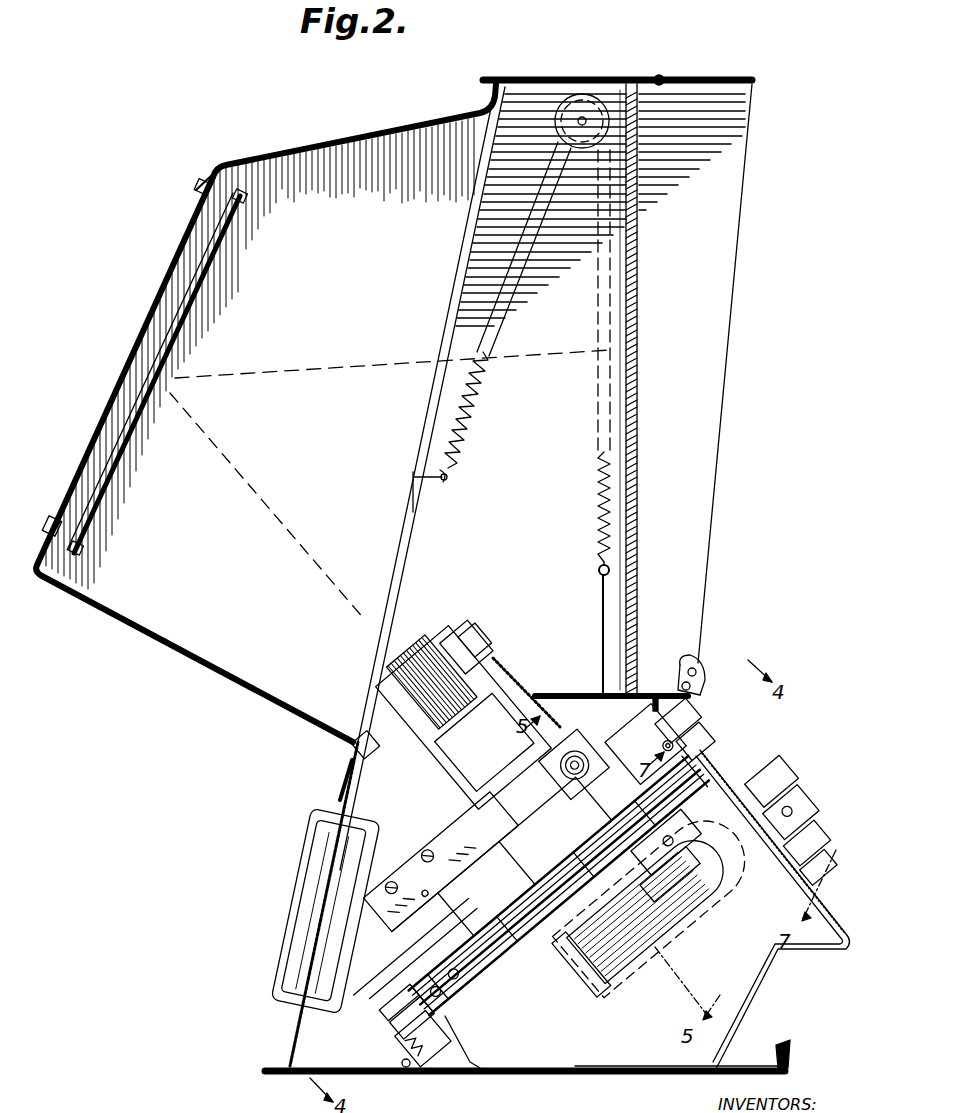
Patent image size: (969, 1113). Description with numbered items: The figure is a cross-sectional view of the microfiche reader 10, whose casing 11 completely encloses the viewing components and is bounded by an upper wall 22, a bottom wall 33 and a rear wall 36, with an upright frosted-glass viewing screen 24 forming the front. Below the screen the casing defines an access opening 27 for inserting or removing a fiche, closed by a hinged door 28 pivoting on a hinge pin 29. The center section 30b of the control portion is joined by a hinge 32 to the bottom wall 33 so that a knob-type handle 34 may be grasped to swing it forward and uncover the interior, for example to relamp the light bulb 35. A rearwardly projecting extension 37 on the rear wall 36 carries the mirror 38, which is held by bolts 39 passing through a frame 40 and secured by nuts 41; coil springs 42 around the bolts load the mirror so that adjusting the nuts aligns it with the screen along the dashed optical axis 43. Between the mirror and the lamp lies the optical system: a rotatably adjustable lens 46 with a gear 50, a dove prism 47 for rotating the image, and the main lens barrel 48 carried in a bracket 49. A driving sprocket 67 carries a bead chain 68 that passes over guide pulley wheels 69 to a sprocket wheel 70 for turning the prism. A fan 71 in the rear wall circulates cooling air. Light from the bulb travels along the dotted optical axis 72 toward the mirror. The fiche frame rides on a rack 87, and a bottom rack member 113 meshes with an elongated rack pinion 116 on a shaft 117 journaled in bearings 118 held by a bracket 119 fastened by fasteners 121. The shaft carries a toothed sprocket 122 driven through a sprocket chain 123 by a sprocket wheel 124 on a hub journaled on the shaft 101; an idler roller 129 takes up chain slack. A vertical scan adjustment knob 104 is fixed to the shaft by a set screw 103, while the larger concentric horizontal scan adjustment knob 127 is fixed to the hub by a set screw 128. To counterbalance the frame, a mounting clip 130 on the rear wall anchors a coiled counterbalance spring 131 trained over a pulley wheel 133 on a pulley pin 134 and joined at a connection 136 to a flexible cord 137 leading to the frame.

The reader or viewer 10 is at (516, 74).
The casing 11 is at (618, 78).
The upper wall 22 is at (648, 77).
The viewing screen 24 is at (640, 256).
The access opening 27 is at (712, 735).
The hinged door 28 is at (700, 692).
The hinge pin 29 is at (700, 668).
The center section of control portion 30b is at (797, 1042).
The hinge 32 is at (780, 1060).
The bottom wall 33 is at (685, 1076).
The knob-type handle 34 is at (722, 742).
The light bulb 35 is at (684, 945).
The rear wall 36 is at (346, 793).
The rearwardly projecting extension 37 is at (112, 618).
The mirror 38 is at (216, 253).
The bolts 39 is at (196, 187).
The frame 40 is at (226, 228).
The nuts 41 is at (244, 198).
The coil springs 42 is at (220, 172).
The optical axis 43 is at (326, 364).
The rotatably adjustable lens 46 is at (500, 975).
The dove prism 47 is at (405, 660).
The main lens barrel 48 is at (521, 690).
The bracket 49 is at (448, 808).
The gear 50 is at (505, 878).
The driving sprocket 67 is at (587, 742).
The bead chain 68 is at (548, 696).
The guide pulley wheels 69 is at (475, 650).
The sprocket wheel 70 is at (447, 642).
The fan 71 is at (330, 898).
The optical axis 72 is at (258, 497).
The rack 87 is at (403, 1030).
The shaft 101 is at (808, 850).
The set screw 103 is at (805, 803).
The vertical scan adjustment knob 104 is at (790, 787).
The rack member 113 is at (460, 1010).
The elongated rack pinion 116 is at (492, 990).
The shaft 117 is at (447, 1007).
The bearings 118 is at (447, 1022).
The bracket 119 is at (440, 1075).
The fasteners 121 is at (405, 1068).
The toothed sprocket 122 is at (636, 782).
The sprocket chain 123 is at (690, 840).
The sprocket wheel 124 is at (800, 900).
The horizontal scan adjustment knob 127 is at (815, 875).
The set screw 128 is at (812, 818).
The idler roller 129 is at (690, 860).
The mounting clip 130 is at (445, 482).
The coiled counterbalance spring 131 is at (463, 430).
The pulley wheel 133 is at (568, 170).
The pulley pin 134 is at (580, 117).
The connection 136 is at (598, 560).
The flexible cord 137 is at (600, 592).